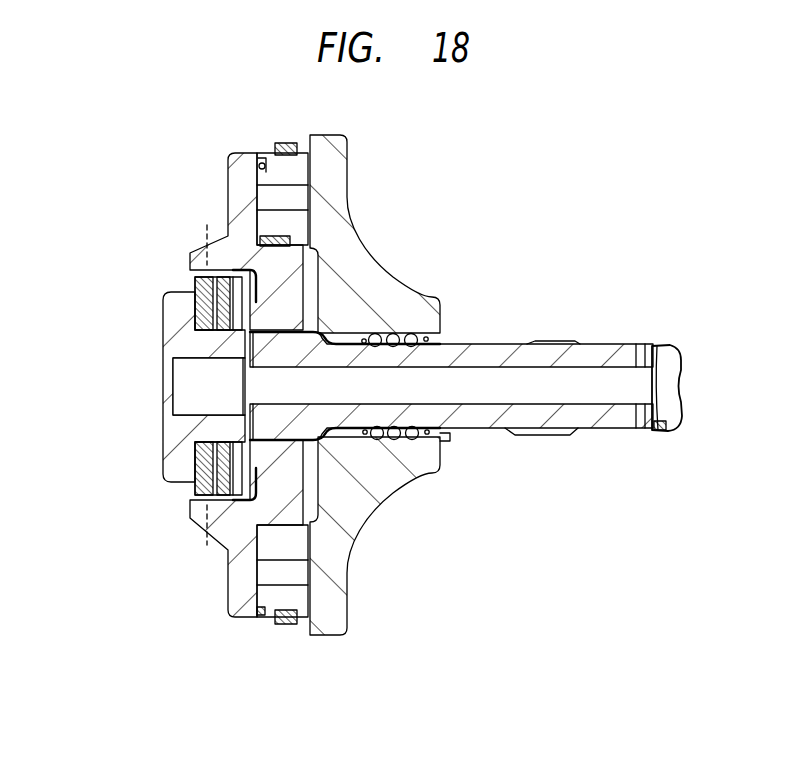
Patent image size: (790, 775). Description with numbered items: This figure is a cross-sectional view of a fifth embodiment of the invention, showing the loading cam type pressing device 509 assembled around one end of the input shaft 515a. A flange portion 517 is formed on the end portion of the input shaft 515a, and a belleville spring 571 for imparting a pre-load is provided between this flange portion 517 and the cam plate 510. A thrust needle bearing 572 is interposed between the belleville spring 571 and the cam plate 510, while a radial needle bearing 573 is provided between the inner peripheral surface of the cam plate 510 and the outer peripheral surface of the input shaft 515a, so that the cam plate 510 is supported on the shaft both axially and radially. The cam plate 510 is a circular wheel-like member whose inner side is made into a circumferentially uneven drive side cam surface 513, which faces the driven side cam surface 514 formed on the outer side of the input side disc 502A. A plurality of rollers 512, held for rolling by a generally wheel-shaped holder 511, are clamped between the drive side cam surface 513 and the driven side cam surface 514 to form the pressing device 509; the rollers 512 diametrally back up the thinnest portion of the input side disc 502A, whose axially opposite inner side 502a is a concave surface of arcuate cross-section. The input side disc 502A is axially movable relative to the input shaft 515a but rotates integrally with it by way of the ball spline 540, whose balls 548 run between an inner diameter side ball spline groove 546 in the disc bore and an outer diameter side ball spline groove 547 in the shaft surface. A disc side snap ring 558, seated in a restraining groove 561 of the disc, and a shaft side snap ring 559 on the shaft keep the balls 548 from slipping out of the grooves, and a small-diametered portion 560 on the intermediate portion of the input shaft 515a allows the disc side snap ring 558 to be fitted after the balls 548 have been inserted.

The inner side 502a is at (348, 198).
The input side disc 502A is at (332, 590).
The pressing device 509 is at (237, 182).
The cam plate 510 is at (238, 215).
The holder 511 is at (265, 616).
The rollers 512 is at (284, 197).
The drive side cam surface 513 is at (262, 165).
The driven side cam surface 514 is at (305, 595).
The input shaft 515a is at (612, 350).
The flange portion 517 is at (172, 472).
The ball spline 540 is at (455, 524).
The inner diameter side ball spline groove 546 is at (364, 333).
The outer diameter side ball spline groove 547 is at (358, 440).
The balls 548 is at (388, 348).
The disc side snap ring 558 is at (452, 344).
The shaft side snap ring 559 is at (415, 430).
The small-diametered portion 560 is at (515, 343).
The restraining groove 561 is at (447, 440).
The belleville spring 571 is at (197, 309).
The thrust needle bearing 572 is at (250, 266).
The radial needle bearing 573 is at (235, 400).